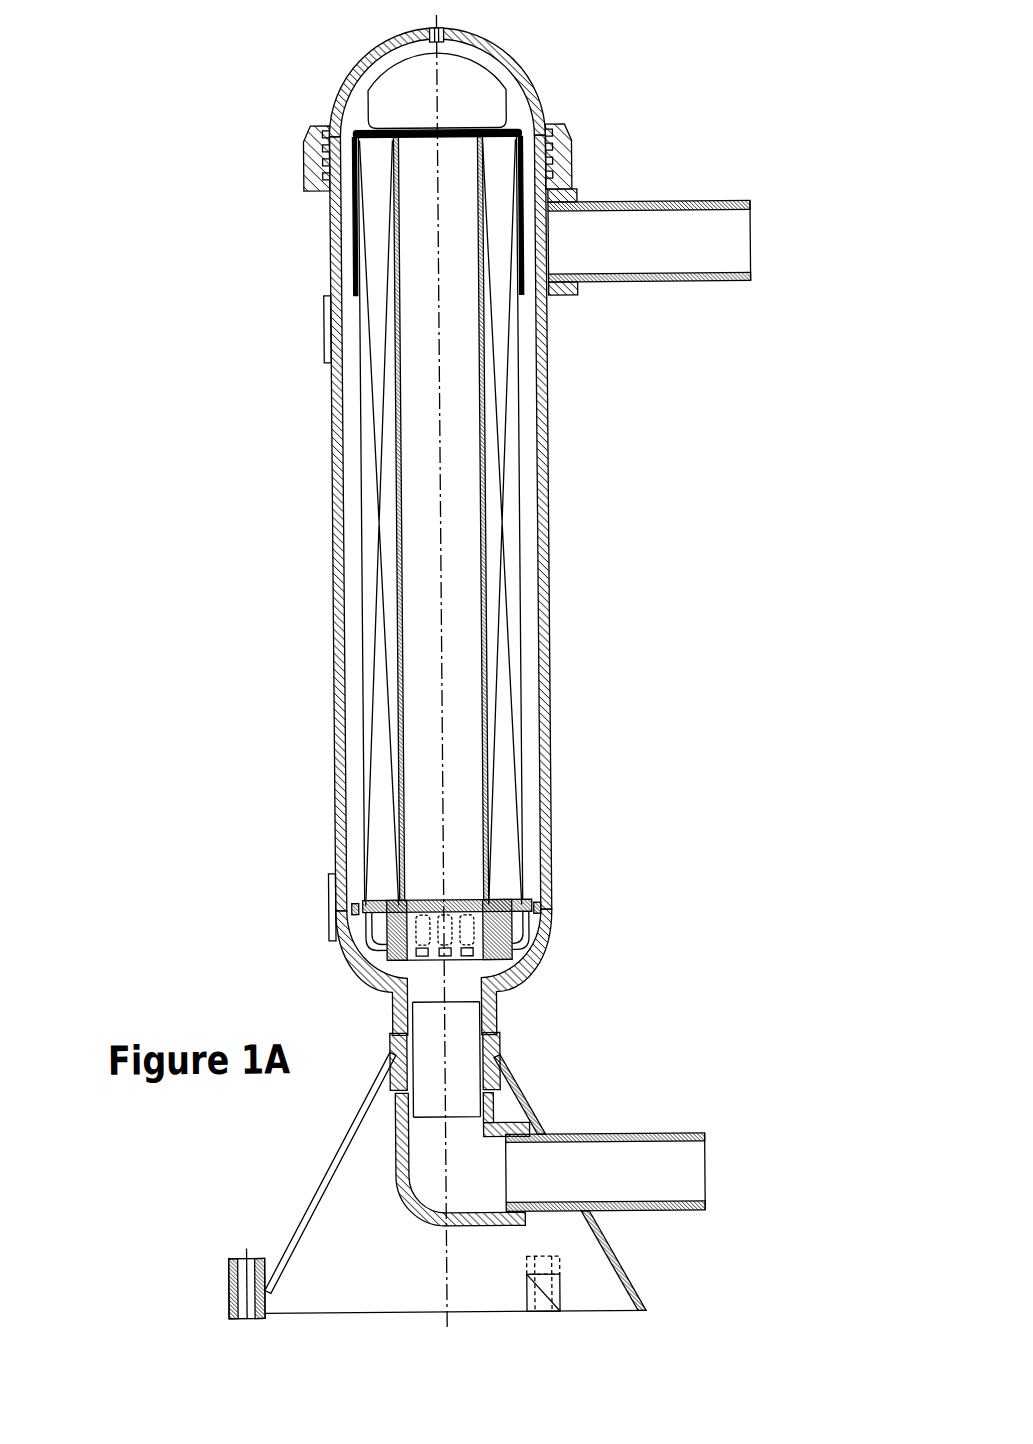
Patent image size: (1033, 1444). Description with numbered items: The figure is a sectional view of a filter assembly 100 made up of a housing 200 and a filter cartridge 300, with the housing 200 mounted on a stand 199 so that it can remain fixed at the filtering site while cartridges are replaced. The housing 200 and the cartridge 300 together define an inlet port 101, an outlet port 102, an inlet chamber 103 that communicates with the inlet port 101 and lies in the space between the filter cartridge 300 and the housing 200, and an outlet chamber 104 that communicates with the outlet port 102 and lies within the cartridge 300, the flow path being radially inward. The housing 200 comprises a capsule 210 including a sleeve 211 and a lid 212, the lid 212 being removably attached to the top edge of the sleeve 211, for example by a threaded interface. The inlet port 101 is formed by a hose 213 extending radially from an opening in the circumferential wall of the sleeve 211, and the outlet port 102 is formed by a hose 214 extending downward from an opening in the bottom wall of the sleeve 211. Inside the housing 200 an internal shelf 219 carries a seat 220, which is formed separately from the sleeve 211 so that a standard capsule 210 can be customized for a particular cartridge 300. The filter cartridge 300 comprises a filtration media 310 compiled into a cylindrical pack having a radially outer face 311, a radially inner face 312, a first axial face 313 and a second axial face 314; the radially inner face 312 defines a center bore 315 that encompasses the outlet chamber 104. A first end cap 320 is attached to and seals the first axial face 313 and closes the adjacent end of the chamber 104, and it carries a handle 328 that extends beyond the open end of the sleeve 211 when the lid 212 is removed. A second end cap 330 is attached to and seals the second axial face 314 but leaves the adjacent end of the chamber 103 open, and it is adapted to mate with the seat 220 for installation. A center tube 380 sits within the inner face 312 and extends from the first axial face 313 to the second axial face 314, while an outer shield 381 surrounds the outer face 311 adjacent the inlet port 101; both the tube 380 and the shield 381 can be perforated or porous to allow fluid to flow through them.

The filter assembly 100 is at (684, 417).
The inlet port 101 is at (730, 229).
The outlet port 102 is at (676, 1152).
The inlet chamber 103 is at (546, 356).
The outlet chamber 104 is at (457, 446).
The stand 199 is at (302, 1204).
The housing 200 is at (552, 591).
The capsule 210 is at (552, 478).
The sleeve 211 is at (548, 391).
The lid 212 is at (491, 49).
The hose 213 is at (675, 204).
The hose 214 is at (631, 1209).
The internal shelf 219 is at (548, 926).
The seat 220 is at (536, 978).
The filter cartridge 300 is at (515, 684).
The filtration media 310 is at (501, 636).
The radially outer face 311 is at (535, 719).
The radially inner face 312 is at (485, 796).
The first axial face 313 is at (370, 134).
The second axial face 314 is at (371, 895).
The center bore 315 is at (457, 496).
The first end cap 320 is at (518, 99).
The handle 328 is at (388, 64).
The second end cap 330 is at (508, 899).
The center tube 380 is at (480, 771).
The outer shield 381 is at (357, 234).